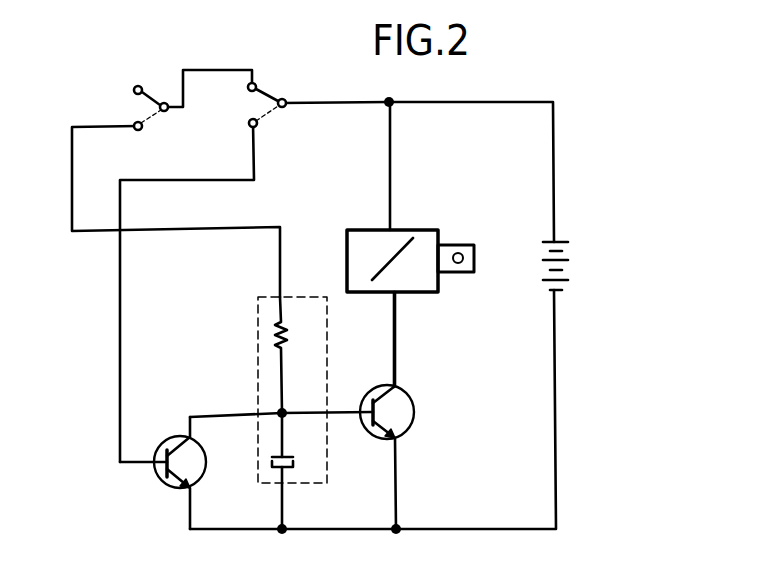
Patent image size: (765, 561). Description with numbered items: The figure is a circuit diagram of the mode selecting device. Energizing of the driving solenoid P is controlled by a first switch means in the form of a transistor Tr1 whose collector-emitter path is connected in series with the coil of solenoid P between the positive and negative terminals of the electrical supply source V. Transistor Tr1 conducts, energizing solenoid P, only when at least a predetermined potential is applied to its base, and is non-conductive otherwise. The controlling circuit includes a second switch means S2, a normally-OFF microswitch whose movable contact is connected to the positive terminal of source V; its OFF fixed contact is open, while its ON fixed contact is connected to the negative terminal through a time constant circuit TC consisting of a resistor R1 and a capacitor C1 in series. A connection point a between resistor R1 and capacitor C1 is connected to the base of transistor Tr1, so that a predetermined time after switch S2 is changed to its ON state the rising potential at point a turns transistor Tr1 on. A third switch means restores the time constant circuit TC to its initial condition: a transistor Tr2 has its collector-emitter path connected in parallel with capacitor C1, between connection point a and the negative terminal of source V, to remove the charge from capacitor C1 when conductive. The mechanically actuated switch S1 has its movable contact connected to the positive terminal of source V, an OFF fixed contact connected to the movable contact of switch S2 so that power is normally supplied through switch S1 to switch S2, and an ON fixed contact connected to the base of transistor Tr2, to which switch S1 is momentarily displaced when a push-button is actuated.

The switch S1 is at (249, 101).
The second switch means S2 is at (131, 104).
The driving solenoid P is at (402, 230).
The electrical supply source V is at (538, 267).
The time constant circuit TC is at (302, 297).
The resistor R1 is at (294, 355).
The capacitor C1 is at (298, 471).
The connection point a is at (281, 402).
The first switch means Tr1 is at (416, 412).
The transistor Tr2 is at (163, 442).